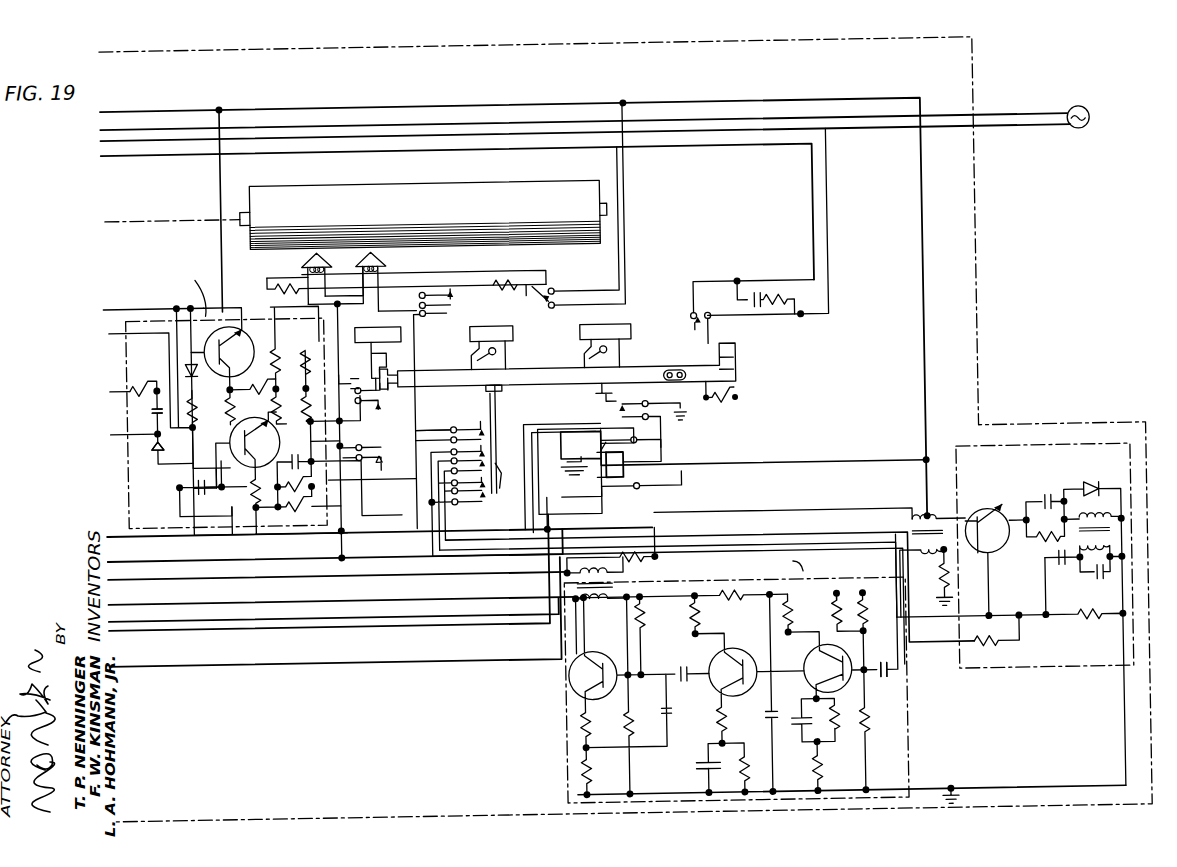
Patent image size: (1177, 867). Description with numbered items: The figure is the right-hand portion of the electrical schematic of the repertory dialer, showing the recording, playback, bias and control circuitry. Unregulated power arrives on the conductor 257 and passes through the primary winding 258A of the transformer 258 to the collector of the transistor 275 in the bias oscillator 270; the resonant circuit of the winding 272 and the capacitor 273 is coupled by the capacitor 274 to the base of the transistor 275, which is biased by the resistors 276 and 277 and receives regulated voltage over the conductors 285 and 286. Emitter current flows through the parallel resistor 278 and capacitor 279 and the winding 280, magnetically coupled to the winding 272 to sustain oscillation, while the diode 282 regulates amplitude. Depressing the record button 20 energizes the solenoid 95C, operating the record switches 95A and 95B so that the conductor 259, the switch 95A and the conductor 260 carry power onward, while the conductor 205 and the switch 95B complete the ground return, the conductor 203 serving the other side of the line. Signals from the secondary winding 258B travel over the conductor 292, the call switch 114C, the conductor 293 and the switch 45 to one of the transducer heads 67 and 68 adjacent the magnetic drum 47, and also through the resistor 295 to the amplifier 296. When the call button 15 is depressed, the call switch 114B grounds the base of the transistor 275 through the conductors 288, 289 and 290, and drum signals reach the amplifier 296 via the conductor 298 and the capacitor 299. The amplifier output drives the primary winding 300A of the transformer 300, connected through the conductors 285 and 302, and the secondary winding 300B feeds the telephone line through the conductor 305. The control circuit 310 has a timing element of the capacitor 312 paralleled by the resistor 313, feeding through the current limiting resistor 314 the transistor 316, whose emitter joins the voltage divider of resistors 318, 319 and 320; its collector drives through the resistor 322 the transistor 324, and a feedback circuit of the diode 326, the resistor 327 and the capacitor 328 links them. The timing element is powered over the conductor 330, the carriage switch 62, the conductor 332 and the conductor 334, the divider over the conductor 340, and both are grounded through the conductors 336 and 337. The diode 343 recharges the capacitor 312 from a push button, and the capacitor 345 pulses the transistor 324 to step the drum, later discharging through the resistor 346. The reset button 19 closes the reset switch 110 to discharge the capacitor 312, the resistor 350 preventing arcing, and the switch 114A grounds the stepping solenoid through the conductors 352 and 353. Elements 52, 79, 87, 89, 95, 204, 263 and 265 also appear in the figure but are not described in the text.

The call button 15 is at (500, 335).
The reset button 19 is at (378, 332).
The record button 20 is at (605, 335).
The switch 45 is at (458, 306).
The magnetic drum 47 is at (415, 193).
The lead 52 is at (545, 278).
The carriage switch 62 is at (528, 302).
The transducer head 67 is at (300, 263).
The transducer head 68 is at (388, 261).
The relay bar 79 is at (738, 380).
The switch 87 is at (712, 338).
The resistor 89 is at (700, 408).
The switch 95 is at (630, 410).
The record switch 95A is at (650, 436).
The record switch 95B is at (640, 496).
The solenoid 95C is at (660, 457).
The reset switch 110 is at (366, 408).
The switch 114A is at (496, 436).
The call switch 114B is at (470, 436).
The call switch 114C is at (498, 500).
The conductor 203 is at (125, 536).
The relay 204 is at (549, 490).
The conductor 205 is at (562, 532).
The conductor 257 is at (294, 111).
The transformer 258 is at (947, 574).
The primary winding 258A is at (921, 526).
The secondary winding 258B is at (896, 574).
The conductor 259 is at (564, 446).
The conductor 260 is at (134, 632).
The conductor 263 is at (170, 563).
The AC source 265 is at (1091, 123).
The bias oscillator 270 is at (1038, 684).
The winding 272 is at (1110, 563).
The capacitor 273 is at (1100, 602).
The capacitor 274 is at (1052, 588).
The transistor 275 is at (998, 522).
The resistor 276 is at (982, 660).
The resistor 277 is at (1086, 638).
The resistor 278 is at (1040, 562).
The capacitor 279 is at (1040, 520).
The winding 280 is at (1122, 523).
The diode 282 is at (1080, 500).
The conductor 285 is at (132, 624).
The conductor 286 is at (701, 590).
The conductor 288 is at (430, 554).
The conductor 289 is at (375, 505).
The conductor 290 is at (345, 655).
The conductor 292 is at (438, 532).
The conductor 293 is at (416, 331).
The resistor 295 is at (852, 608).
The amplifier 296 is at (901, 745).
The conductor 298 is at (440, 546).
The capacitor 299 is at (882, 699).
The transformer 300 is at (574, 586).
The primary winding 300A is at (594, 616).
The secondary winding 300B is at (560, 570).
The conductor 302 is at (132, 604).
The conductor 305 is at (188, 581).
The control circuit 310 is at (318, 313).
The capacitor 312 is at (298, 458).
The resistor 313 is at (330, 486).
The current limiting resistor 314 is at (252, 500).
The transistor 316 is at (214, 470).
The resistor 318 is at (270, 335).
The resistor 319 is at (272, 398).
The resistor 320 is at (347, 376).
The current limiting resistor 322 is at (201, 427).
The transistor 324 is at (252, 328).
The diode 326 is at (180, 366).
The resistor 327 is at (200, 440).
The capacitor 328 is at (168, 488).
The conductor 330 is at (628, 227).
The conductor 332 is at (121, 158).
The conductor 334 is at (131, 317).
The conductor 336 is at (340, 452).
The conductor 337 is at (358, 387).
The conductor 340 is at (226, 172).
The diode 343 is at (150, 456).
The capacitor 345 is at (150, 420).
The resistor 346 is at (124, 388).
The resistor 350 is at (388, 532).
The conductor 352 is at (124, 315).
The conductor 353 is at (424, 430).